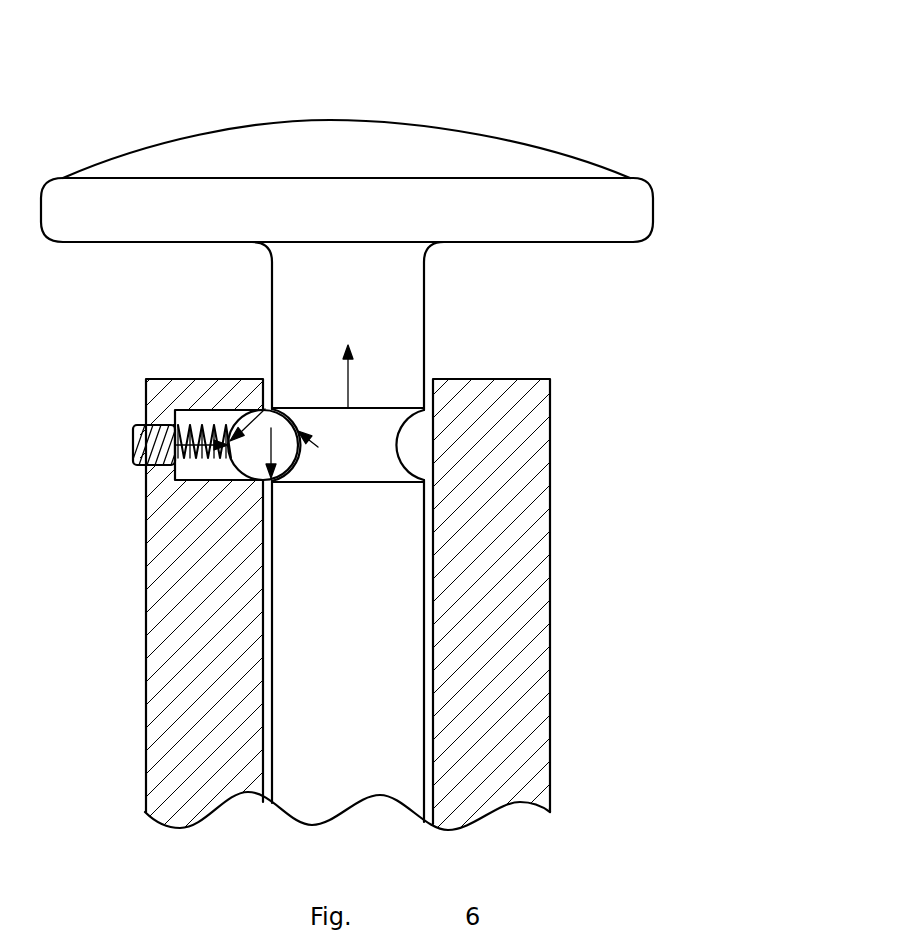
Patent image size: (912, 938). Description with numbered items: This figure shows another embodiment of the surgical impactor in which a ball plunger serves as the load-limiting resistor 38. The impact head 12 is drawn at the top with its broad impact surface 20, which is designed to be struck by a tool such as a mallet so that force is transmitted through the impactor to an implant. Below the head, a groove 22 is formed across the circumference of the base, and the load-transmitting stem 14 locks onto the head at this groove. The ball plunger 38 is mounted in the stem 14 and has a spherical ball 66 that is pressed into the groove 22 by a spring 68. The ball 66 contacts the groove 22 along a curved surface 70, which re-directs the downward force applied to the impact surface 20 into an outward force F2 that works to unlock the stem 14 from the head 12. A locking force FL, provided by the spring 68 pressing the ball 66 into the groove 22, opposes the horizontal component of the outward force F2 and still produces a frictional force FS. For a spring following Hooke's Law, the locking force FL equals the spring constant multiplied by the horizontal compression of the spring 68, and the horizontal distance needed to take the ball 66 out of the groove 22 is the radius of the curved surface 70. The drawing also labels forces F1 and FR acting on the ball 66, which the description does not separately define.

The impact head 12 is at (424, 436).
The load-transmitting stem 14 is at (567, 658).
The impact surface 20 is at (360, 127).
The groove 22 is at (348, 532).
The load-limiting resistor 38 is at (133, 443).
The spherical ball 66 is at (250, 467).
The spring 68 is at (195, 428).
The curved surface 70 is at (300, 447).
The frictional force FS is at (365, 375).
The reaction force FR is at (275, 466).
The locking force FL is at (200, 452).
The force F1 is at (308, 440).
The outward force F2 is at (236, 428).